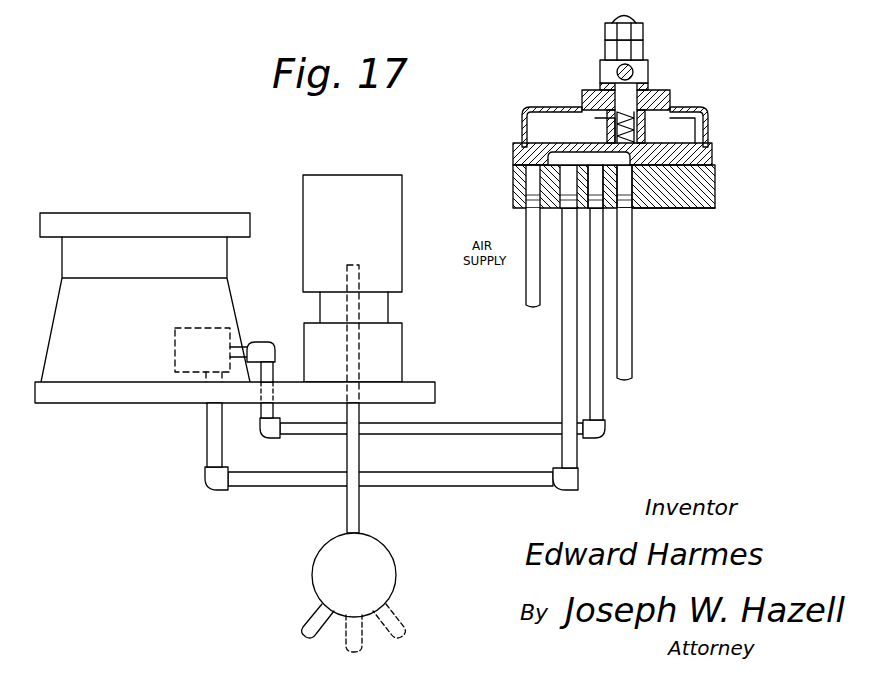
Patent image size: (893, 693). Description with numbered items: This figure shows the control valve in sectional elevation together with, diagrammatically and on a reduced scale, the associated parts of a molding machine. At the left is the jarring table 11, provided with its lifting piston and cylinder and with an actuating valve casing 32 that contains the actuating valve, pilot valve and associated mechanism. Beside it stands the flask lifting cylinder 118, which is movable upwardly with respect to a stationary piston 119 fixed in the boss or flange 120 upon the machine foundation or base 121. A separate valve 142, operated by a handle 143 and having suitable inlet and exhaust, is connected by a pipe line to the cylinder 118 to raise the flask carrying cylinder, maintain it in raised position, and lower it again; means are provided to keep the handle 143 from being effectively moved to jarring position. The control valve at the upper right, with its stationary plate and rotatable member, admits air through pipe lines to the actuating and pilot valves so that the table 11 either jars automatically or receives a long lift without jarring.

The jarring table 11 is at (137, 222).
The actuating valve casing 32 is at (175, 346).
The flask lifting cylinder 118 is at (387, 218).
The stationary piston 119 is at (375, 308).
The boss or flange 120 is at (387, 355).
The machine foundation or base 121 is at (420, 392).
The separate valve 142 is at (312, 580).
The handle 143 is at (308, 618).